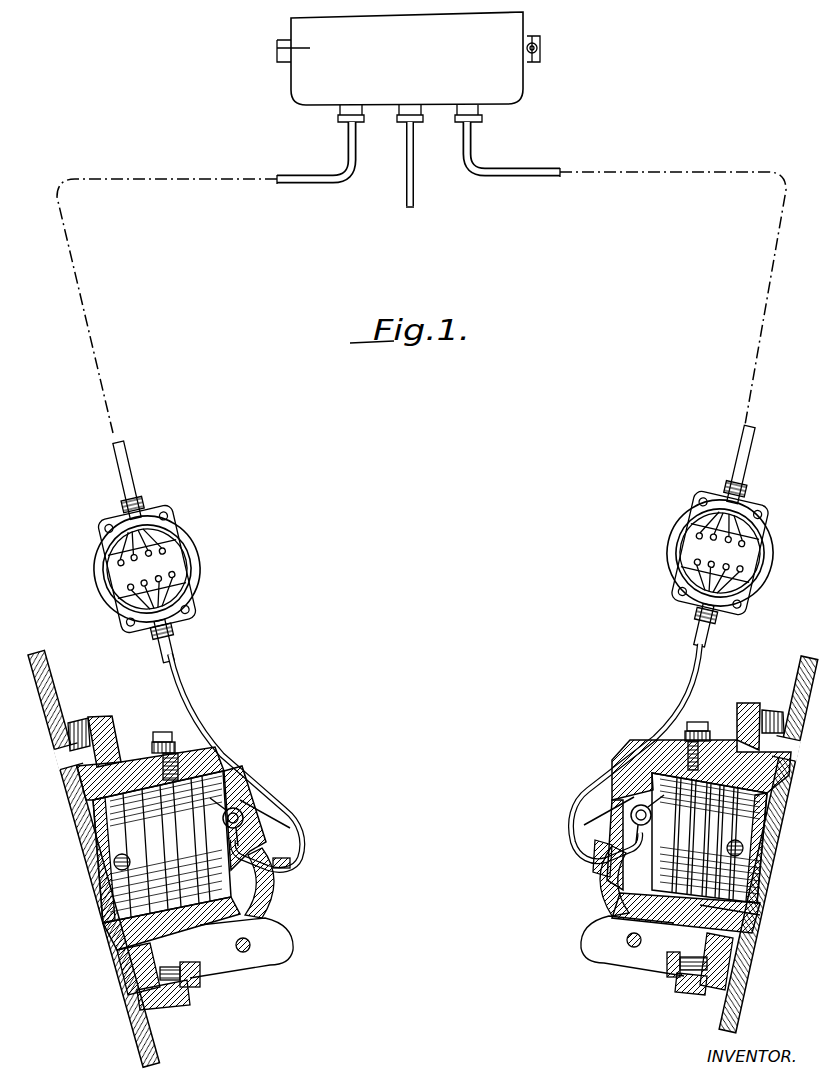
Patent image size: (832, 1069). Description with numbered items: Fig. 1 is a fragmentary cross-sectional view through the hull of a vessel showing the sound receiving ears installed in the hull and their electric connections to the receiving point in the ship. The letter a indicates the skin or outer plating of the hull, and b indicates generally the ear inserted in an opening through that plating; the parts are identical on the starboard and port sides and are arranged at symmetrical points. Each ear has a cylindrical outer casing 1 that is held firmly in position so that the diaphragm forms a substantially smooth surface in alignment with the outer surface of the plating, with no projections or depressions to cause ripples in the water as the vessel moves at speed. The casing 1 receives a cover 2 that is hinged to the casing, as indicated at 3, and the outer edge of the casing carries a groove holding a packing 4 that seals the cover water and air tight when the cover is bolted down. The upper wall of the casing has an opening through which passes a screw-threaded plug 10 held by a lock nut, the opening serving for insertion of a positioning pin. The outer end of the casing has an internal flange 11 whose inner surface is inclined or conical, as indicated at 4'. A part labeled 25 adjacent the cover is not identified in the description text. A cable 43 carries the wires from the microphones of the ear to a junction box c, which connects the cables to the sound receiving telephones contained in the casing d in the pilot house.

The outer casing 1 is at (68, 803).
The cover 2 is at (260, 803).
The hinge 3 is at (243, 953).
The packing 4 is at (437, 912).
The inclined or conical surface 4' is at (747, 917).
The screw-threaded plug 10 is at (155, 747).
The internal flange 11 is at (166, 736).
The end cap 25 is at (290, 862).
The cable 43 is at (188, 692).
The skin or outer plating a is at (722, 1001).
The ear b is at (108, 718).
The junction box c is at (197, 546).
The casing d is at (291, 92).